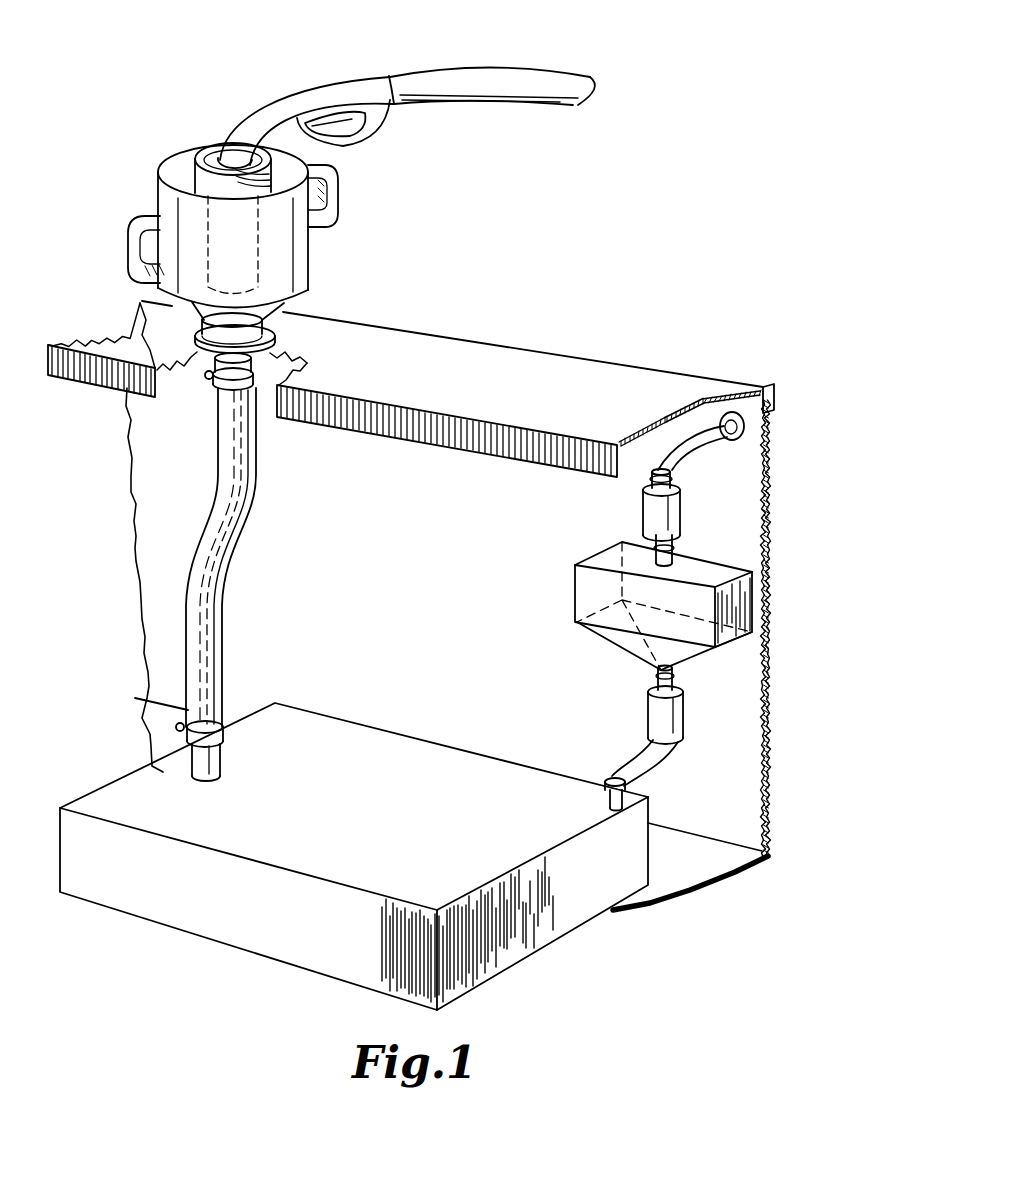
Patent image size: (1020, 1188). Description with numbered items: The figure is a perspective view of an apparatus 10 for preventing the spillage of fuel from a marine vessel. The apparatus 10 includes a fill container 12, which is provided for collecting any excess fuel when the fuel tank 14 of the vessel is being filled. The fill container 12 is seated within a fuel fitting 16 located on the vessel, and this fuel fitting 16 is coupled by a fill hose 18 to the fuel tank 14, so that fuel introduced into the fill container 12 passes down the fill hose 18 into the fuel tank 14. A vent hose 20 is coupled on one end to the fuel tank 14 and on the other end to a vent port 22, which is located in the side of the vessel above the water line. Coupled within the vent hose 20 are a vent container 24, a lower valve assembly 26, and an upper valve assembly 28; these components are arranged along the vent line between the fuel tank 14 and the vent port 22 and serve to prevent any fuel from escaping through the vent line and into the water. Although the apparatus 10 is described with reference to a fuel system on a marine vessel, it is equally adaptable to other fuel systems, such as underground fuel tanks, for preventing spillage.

The apparatus 10 is at (219, 90).
The fill container 12 is at (183, 163).
The fuel tank 14 is at (135, 797).
The fuel fitting 16 is at (193, 332).
The fill hose 18 is at (232, 467).
The vent hose 20 is at (687, 453).
The vent port 22 is at (744, 428).
The vent container 24 is at (610, 555).
The lower valve assembly 26 is at (683, 713).
The upper valve assembly 28 is at (680, 503).